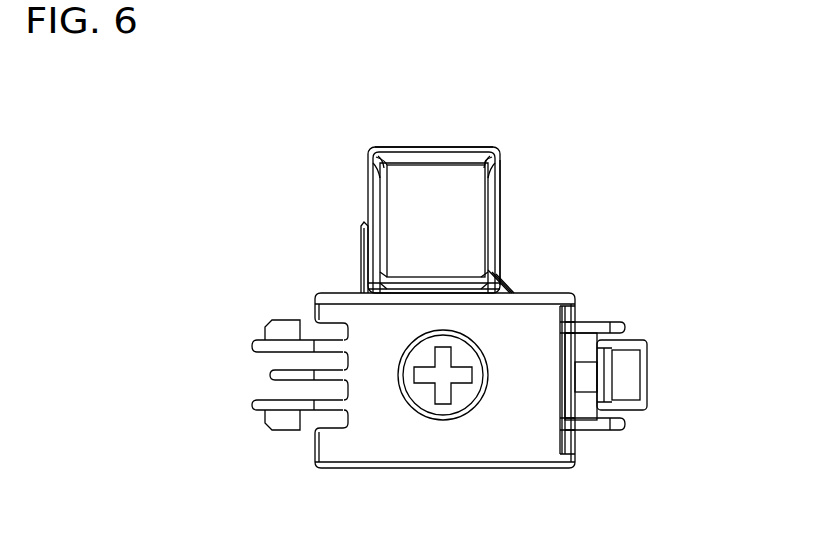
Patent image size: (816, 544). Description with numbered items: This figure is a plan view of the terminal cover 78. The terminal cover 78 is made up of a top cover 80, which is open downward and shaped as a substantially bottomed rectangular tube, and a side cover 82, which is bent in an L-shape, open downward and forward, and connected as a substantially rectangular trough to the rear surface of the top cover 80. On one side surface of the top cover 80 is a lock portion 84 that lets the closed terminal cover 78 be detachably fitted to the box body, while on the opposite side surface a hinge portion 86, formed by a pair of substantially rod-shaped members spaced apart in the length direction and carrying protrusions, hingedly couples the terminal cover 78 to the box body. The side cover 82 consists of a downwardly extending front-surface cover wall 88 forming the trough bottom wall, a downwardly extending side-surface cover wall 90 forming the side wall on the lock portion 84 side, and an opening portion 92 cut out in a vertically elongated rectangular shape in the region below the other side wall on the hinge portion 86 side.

The terminal cover 78 is at (438, 79).
The top cover 80 is at (577, 278).
The side cover 82 is at (500, 133).
The lock portion 84 is at (647, 332).
The hinge portion 86 is at (230, 335).
The front-surface cover wall 88 is at (429, 147).
The side-surface cover wall 90 is at (500, 207).
The opening portion 92 is at (350, 218).